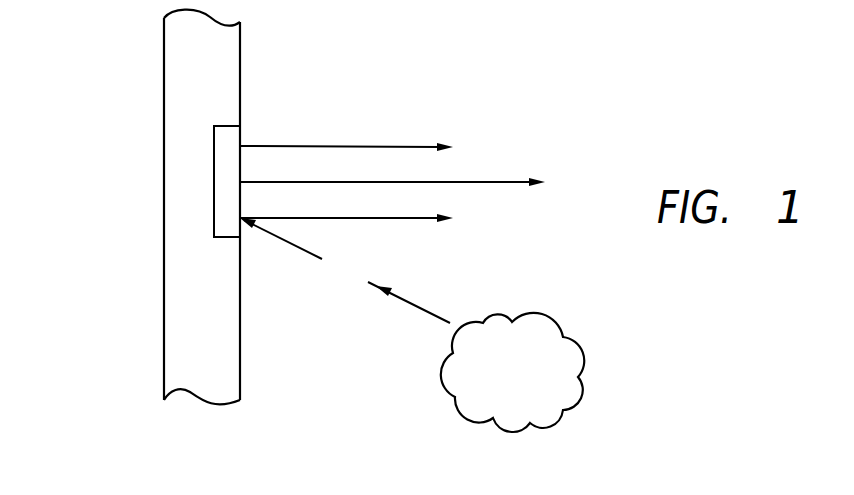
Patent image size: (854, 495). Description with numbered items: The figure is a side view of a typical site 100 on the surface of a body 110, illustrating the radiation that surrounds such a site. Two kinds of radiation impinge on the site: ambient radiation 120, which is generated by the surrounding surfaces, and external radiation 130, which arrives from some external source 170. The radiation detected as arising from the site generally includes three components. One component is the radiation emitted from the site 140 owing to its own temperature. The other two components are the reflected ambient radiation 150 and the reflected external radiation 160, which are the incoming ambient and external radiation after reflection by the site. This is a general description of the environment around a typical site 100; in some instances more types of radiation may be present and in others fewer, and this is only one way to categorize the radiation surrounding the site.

The site 100 is at (230, 193).
The body 110 is at (222, 81).
The ambient radiation 120 is at (240, 145).
The external radiation 130 is at (345, 270).
The emitted radiation 140 is at (416, 183).
The reflected ambient radiation 150 is at (372, 147).
The reflected external radiation 160 is at (372, 219).
The external source 170 is at (535, 379).